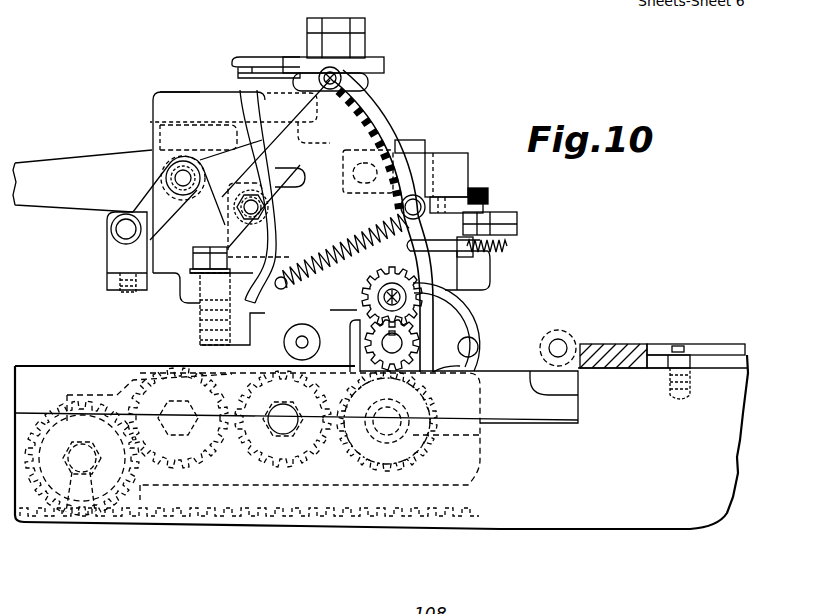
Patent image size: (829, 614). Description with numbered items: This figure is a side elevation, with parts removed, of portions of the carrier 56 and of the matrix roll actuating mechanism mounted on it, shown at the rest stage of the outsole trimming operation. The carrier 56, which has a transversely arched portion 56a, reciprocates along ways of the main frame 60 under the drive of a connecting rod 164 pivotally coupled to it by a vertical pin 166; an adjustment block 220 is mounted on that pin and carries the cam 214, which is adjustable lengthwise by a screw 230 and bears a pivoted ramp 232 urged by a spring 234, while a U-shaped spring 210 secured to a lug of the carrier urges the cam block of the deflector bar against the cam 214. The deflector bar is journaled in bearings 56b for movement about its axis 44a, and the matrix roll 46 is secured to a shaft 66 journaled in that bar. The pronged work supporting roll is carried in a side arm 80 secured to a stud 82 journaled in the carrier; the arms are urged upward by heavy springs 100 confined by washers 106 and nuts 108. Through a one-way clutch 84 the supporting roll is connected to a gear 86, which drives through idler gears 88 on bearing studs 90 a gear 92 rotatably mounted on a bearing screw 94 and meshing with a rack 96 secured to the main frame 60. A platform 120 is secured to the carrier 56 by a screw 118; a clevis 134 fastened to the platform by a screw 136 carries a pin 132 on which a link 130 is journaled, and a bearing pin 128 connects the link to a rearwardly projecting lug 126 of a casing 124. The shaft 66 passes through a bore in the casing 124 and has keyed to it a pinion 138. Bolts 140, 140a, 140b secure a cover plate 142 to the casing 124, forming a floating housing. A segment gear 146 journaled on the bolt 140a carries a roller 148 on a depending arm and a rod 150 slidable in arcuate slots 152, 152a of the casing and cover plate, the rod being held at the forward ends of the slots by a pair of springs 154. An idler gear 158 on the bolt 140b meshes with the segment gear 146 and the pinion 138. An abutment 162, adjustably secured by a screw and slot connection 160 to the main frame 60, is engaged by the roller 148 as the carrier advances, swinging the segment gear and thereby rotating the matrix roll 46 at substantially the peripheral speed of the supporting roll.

The axis 44a is at (478, 358).
The matrix roll 46 is at (480, 395).
The carrier 56 is at (152, 363).
The transversely arched portion 56a is at (170, 90).
The bearings 56b is at (580, 318).
The main frame 60 is at (498, 530).
The shaft 66 is at (455, 345).
The side arm 80 is at (145, 487).
The stud 82 is at (90, 512).
The one-way clutch 84 is at (387, 470).
The gear 86 is at (480, 437).
The idler gears 88 is at (255, 480).
The bearing studs 90 is at (178, 465).
The gear 92 is at (50, 515).
The bearing screw 94 is at (70, 515).
The rack 96 is at (478, 518).
The springs 100 is at (370, 82).
The washers 106 is at (385, 65).
The nuts 108 is at (309, 40).
The screw 118 is at (203, 250).
The platform 120 is at (165, 300).
The casing 124 is at (413, 130).
The rearwardly projecting lug 126 is at (215, 160).
The bearing pin 128 is at (183, 174).
The link 130 is at (140, 199).
The pin 132 is at (111, 230).
The clevis 134 is at (108, 245).
The screw 136 is at (112, 268).
The pinion 138 is at (462, 318).
The bolt 140 is at (340, 75).
The bolt 140a is at (243, 112).
The bolt 140b is at (445, 283).
The cover plate 142 is at (241, 92).
The segment gear 146 is at (375, 118).
The roller 148 is at (290, 340).
The rod 150 is at (268, 224).
The arcuate slot 152 is at (318, 280).
The arcuate slot 152a is at (288, 207).
The springs 154 is at (292, 206).
The idler gear 158 is at (405, 283).
The screw and slot connection 160 is at (690, 344).
The abutment 162 is at (649, 344).
The connecting rod 164 is at (55, 165).
The vertical pin 166 is at (245, 57).
The U-shaped spring 210 is at (492, 262).
The cam 214 is at (470, 170).
The adjustment block 220 is at (428, 146).
The screw 230 is at (490, 198).
The ramp 232 is at (520, 222).
The spring 234 is at (512, 250).